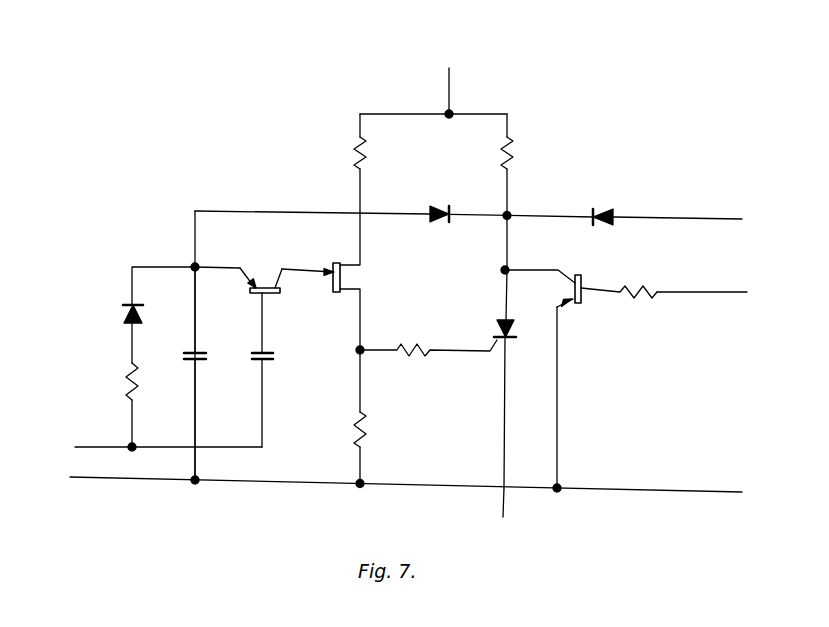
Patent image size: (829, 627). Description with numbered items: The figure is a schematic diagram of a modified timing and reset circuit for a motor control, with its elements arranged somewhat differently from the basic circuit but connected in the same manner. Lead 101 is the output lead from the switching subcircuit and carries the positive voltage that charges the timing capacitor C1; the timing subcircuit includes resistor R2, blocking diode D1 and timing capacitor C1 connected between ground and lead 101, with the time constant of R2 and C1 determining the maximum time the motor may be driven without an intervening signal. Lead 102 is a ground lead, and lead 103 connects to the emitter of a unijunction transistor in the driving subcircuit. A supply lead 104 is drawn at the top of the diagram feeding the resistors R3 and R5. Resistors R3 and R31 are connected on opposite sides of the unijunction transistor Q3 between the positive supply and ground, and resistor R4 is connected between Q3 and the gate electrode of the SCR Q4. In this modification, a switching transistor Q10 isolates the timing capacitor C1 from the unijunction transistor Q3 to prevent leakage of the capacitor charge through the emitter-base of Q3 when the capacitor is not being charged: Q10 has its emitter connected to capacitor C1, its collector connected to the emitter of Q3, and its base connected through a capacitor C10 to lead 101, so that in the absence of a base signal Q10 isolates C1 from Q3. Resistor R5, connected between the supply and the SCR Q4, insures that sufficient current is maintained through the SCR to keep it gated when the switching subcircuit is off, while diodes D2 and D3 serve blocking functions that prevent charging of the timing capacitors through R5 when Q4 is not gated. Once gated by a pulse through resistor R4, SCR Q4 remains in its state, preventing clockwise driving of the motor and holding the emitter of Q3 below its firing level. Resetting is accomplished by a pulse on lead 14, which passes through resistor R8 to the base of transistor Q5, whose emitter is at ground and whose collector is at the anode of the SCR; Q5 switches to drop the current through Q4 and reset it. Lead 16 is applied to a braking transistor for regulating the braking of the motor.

The output lead 101 is at (102, 447).
The lead 102 is at (108, 478).
The lead 103 is at (702, 217).
The supply terminal 104 is at (449, 84).
The lead 14 is at (712, 292).
The lead 16 is at (503, 507).
The resistor R2 is at (118, 381).
The resistor R3 is at (374, 153).
The resistor R4 is at (428, 340).
The resistor R5 is at (521, 153).
The resistor R8 is at (619, 281).
The resistor R31 is at (380, 429).
The timing capacitor C1 is at (182, 352).
The capacitor C10 is at (284, 354).
The blocking diode D1 is at (119, 315).
The diode D2 is at (441, 200).
The diode D3 is at (606, 202).
The unijunction transistor Q3 is at (313, 265).
The SCR Q4 is at (493, 317).
The transistor Q5 is at (583, 298).
The switching transistor Q10 is at (275, 292).